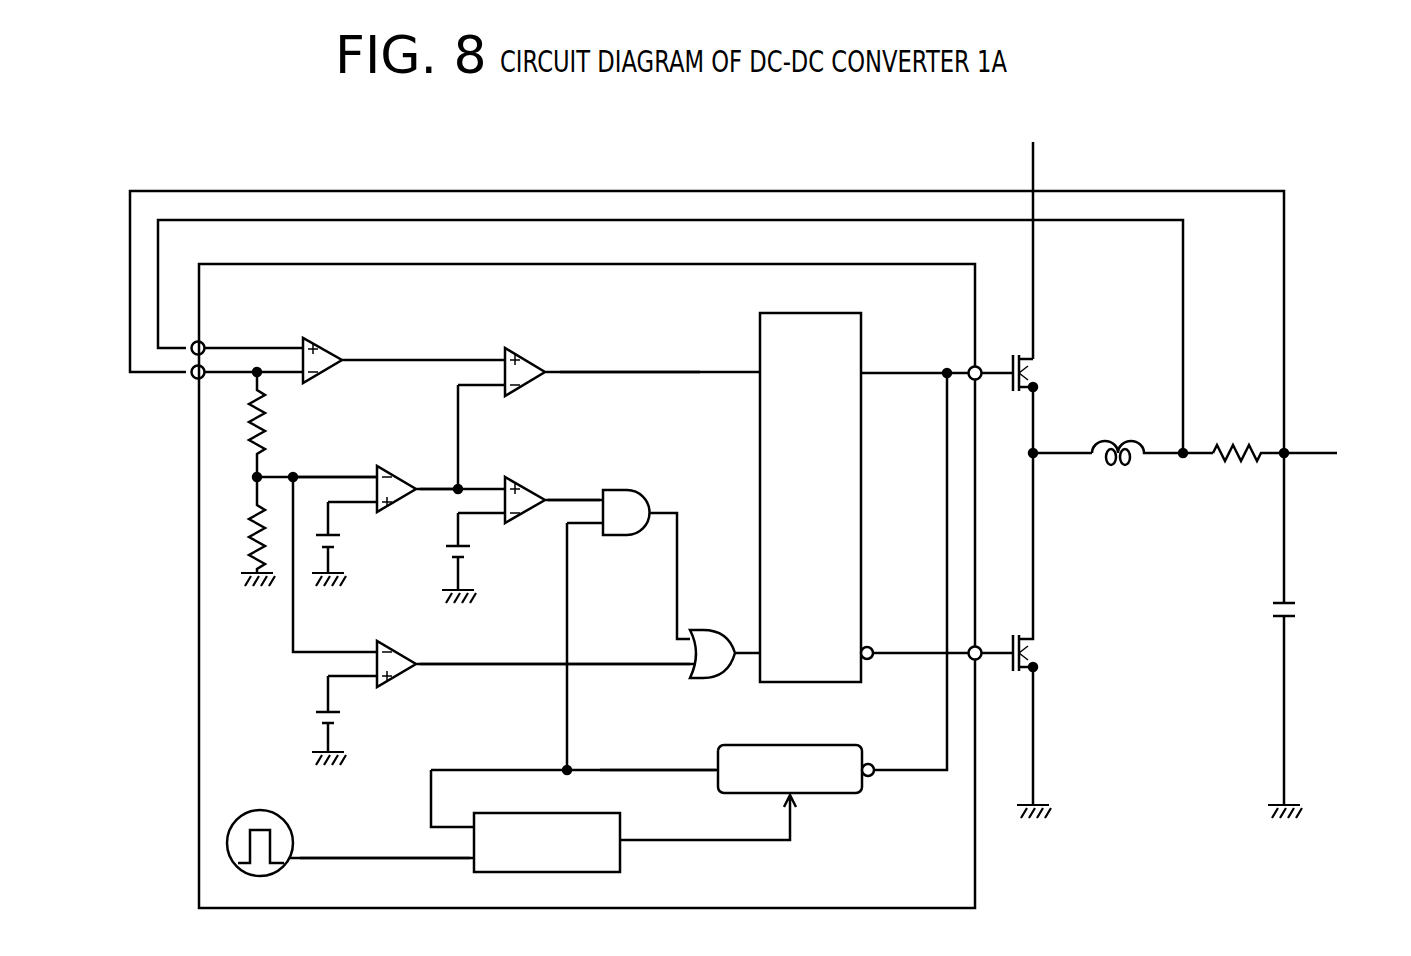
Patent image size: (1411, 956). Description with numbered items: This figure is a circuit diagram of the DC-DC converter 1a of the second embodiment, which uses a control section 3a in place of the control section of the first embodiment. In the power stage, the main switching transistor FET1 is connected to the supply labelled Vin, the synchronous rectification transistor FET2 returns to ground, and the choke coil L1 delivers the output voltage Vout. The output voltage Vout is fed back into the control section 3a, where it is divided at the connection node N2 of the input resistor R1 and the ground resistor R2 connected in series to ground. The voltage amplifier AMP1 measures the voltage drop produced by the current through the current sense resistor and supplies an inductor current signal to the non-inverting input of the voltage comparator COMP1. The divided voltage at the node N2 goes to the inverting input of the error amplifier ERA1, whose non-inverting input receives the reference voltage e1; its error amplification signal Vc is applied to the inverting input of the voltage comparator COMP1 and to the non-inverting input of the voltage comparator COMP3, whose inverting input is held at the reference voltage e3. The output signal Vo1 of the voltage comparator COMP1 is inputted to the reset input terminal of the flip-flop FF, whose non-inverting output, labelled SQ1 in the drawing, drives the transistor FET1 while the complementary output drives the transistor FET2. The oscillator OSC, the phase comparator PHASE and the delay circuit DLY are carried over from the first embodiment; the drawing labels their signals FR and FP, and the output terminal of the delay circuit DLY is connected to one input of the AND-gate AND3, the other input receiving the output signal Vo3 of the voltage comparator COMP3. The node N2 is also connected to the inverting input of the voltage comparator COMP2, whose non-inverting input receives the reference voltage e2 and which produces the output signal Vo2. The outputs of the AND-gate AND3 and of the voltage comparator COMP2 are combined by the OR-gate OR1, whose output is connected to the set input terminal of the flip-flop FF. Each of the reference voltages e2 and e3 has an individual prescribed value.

The DC-DC converter 1a is at (809, 143).
The control section 3a is at (199, 600).
The voltage amplifier AMP1 is at (354, 345).
The voltage comparator COMP1 is at (609, 404).
The voltage comparator COMP2 is at (494, 582).
The voltage comparator COMP3 is at (530, 485).
The error amplifier ERA1 is at (377, 473).
The input resistor R1 is at (236, 424).
The ground resistor R2 is at (241, 531).
The connection node N2 is at (295, 479).
The reference voltage e1 is at (343, 544).
The reference voltage e2 is at (343, 720).
The reference voltage e3 is at (473, 558).
The AND-gate AND3 is at (628, 630).
The OR-gate OR1 is at (718, 670).
The flip-flop FF is at (812, 313).
The flip-flop output signal SQ1 is at (914, 511).
The delay circuit DLY is at (848, 793).
The phase comparator output signal FP is at (658, 756).
The oscillator reference signal FR is at (385, 872).
The phase comparator PHASE is at (525, 821).
The oscillator OSC is at (350, 827).
The main switching transistor FET1 is at (1038, 373).
The synchronous rectification transistor FET2 is at (1038, 602).
The choke coil L1 is at (1121, 438).
The input voltage Vin is at (1035, 234).
The output voltage Vout is at (1287, 629).
The error amplification signal Vc is at (436, 477).
The output signal Vo1 is at (625, 387).
The output signal Vo2 is at (553, 651).
The output signal Vo3 is at (574, 486).